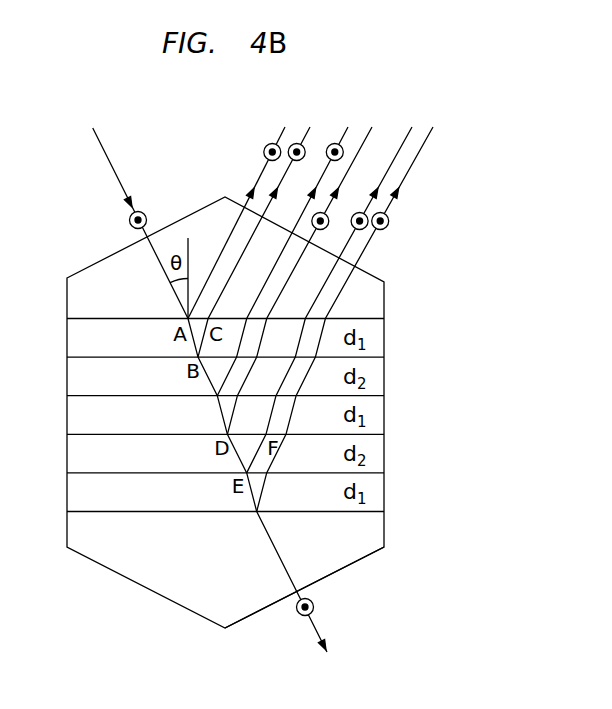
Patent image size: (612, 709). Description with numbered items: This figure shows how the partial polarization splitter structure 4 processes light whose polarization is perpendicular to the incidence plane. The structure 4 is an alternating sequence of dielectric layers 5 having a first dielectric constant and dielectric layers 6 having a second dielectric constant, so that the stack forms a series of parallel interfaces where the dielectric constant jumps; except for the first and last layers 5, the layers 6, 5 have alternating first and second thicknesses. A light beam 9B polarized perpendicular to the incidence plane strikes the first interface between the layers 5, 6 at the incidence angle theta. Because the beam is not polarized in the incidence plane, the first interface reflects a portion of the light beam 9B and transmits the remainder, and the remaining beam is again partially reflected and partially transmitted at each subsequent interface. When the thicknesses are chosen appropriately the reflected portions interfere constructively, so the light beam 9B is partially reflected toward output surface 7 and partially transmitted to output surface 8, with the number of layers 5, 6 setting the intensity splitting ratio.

The structure 4 is at (460, 277).
The dielectric layers 5 is at (385, 282).
The dielectric layers 6 is at (385, 318).
The surface 7 is at (270, 219).
The surface 8 is at (345, 567).
The light beam 9B is at (117, 187).